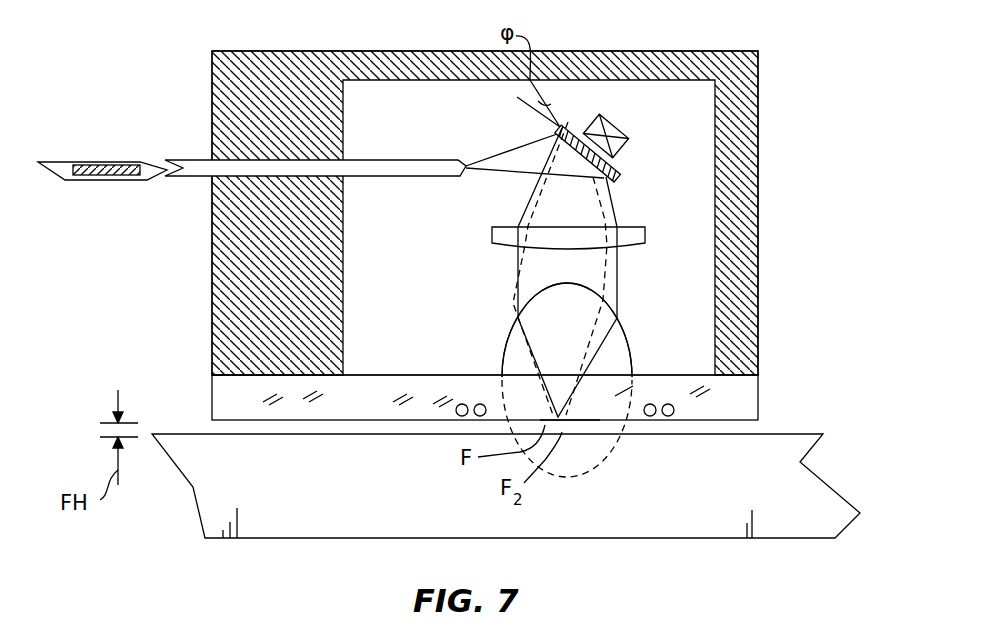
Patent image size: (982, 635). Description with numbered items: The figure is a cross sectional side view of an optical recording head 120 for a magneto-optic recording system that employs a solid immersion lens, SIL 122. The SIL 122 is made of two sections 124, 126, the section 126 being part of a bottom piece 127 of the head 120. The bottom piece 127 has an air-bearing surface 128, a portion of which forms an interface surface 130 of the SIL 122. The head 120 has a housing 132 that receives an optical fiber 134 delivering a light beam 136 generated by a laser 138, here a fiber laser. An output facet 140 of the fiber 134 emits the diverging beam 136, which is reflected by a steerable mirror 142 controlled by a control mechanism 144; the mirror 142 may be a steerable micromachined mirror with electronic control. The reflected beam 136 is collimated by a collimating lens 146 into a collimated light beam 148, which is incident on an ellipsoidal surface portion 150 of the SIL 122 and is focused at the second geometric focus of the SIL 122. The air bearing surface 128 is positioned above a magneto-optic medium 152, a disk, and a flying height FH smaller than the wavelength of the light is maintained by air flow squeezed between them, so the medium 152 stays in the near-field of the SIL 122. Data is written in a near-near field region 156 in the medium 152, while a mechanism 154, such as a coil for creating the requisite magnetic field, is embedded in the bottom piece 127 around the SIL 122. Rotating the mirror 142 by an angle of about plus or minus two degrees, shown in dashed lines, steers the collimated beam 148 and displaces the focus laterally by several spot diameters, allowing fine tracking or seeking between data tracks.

The head 120 is at (146, 73).
The SIL 122 is at (482, 321).
The section 124 is at (580, 332).
The section 126 is at (626, 392).
The bottom piece 127 is at (213, 395).
The air-bearing surface 128 is at (205, 427).
The interface surface 130 is at (592, 426).
The housing 132 is at (758, 178).
The optical fiber 134 is at (190, 156).
The light beam 136 is at (511, 162).
The laser 138 is at (105, 184).
The output facet 140 is at (457, 158).
The steerable mirror 142 is at (624, 180).
The control mechanism 144 is at (624, 134).
The collimating lens 146 is at (491, 232).
The collimated light beam 148 is at (619, 283).
The ellipsoidal surface portion 150 is at (523, 293).
The magneto-optic medium 152 is at (780, 433).
The mechanism 154 is at (462, 402).
The near-near field region 156 is at (572, 440).